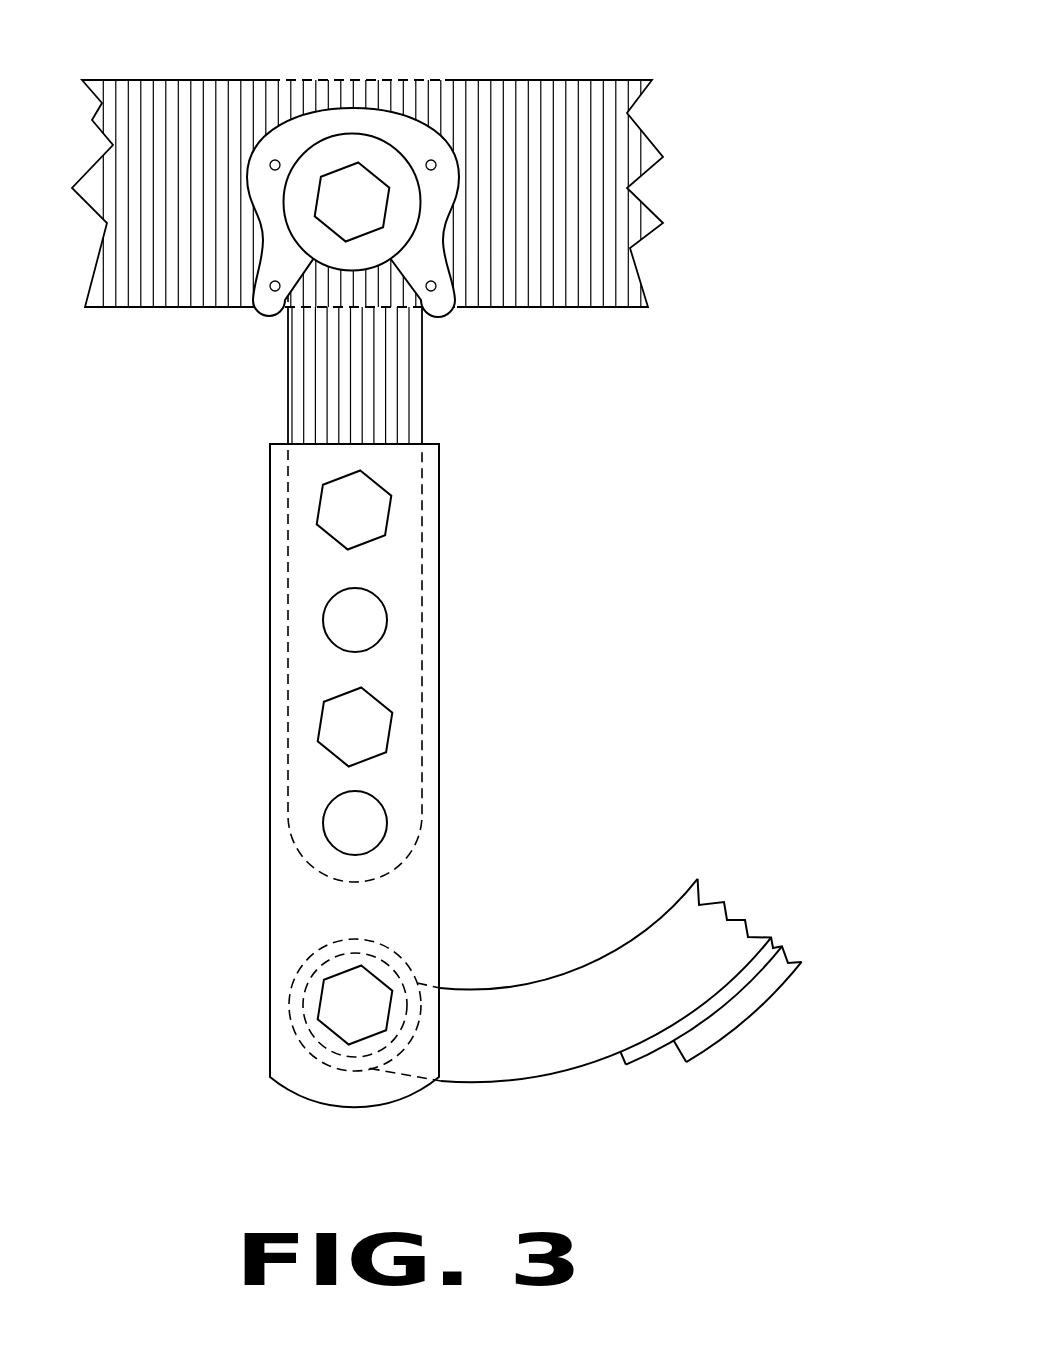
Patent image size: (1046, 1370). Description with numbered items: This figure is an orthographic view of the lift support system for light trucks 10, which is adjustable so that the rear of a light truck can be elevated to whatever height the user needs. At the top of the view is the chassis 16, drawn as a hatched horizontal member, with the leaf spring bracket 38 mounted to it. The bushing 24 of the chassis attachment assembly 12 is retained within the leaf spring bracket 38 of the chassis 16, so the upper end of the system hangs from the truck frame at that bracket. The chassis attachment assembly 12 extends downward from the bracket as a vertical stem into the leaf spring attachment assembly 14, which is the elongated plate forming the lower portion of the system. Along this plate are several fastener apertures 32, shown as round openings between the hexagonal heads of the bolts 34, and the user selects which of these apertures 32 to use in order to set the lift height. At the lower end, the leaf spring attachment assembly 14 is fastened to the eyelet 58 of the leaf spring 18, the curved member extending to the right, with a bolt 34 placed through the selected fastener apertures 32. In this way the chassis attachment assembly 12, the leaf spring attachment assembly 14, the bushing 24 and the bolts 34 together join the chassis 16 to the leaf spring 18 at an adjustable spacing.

The lift support system for light trucks 10 is at (750, 128).
The chassis attachment assembly 12 is at (287, 375).
The leaf spring attachment assembly 14 is at (270, 866).
The chassis 16 is at (367, 252).
The leaf spring 18 is at (586, 908).
The bushing 24 is at (333, 137).
The fastener apertures 32 is at (343, 790).
The bolt 34 is at (376, 168).
The leaf spring bracket 38 is at (440, 313).
The eyelet 58 is at (340, 1070).